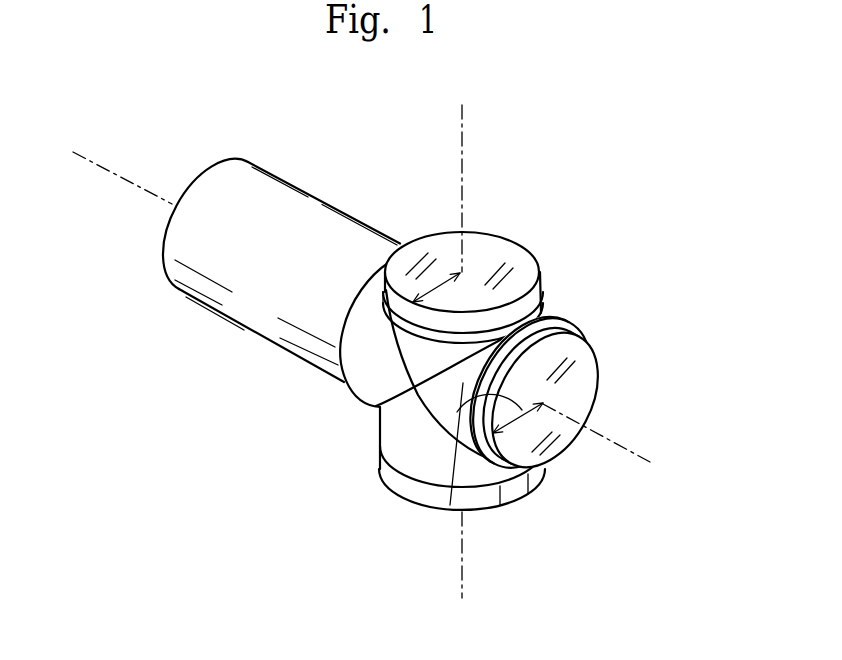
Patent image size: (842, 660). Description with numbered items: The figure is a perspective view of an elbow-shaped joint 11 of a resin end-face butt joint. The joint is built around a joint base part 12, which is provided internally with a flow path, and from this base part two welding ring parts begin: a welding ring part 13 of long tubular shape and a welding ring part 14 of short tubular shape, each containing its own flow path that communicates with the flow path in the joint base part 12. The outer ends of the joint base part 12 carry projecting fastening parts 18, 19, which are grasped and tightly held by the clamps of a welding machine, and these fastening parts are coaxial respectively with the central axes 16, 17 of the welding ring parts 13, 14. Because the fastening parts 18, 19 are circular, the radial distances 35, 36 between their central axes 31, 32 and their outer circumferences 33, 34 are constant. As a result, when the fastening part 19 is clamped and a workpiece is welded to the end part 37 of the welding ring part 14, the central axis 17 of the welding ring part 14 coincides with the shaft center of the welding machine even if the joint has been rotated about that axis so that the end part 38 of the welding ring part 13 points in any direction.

The elbow-shaped joint 11 is at (350, 458).
The joint base part 12 is at (419, 438).
The welding ring part 13 is at (262, 282).
The welding ring part 14 is at (490, 493).
The central axis 16 is at (128, 184).
The central axis 17 is at (465, 547).
The fastening part 18 is at (583, 385).
The fastening part 19 is at (497, 247).
The central axis 31 is at (636, 449).
The central axis 32 is at (465, 158).
The outer circumference 33 is at (550, 320).
The outer circumference 34 is at (545, 314).
The radial distance 35 is at (450, 505).
The radial distance 36 is at (440, 287).
The end part 37 is at (520, 487).
The end part 38 is at (205, 172).